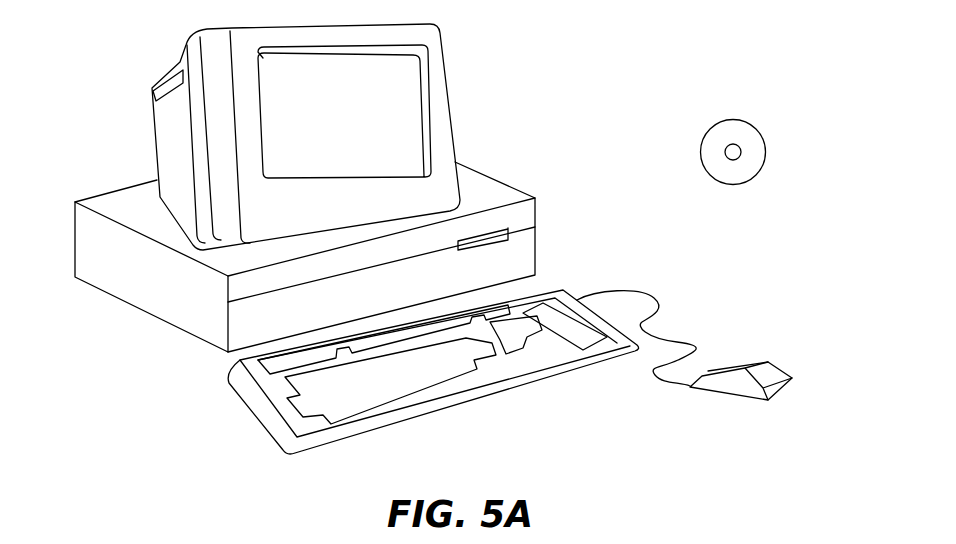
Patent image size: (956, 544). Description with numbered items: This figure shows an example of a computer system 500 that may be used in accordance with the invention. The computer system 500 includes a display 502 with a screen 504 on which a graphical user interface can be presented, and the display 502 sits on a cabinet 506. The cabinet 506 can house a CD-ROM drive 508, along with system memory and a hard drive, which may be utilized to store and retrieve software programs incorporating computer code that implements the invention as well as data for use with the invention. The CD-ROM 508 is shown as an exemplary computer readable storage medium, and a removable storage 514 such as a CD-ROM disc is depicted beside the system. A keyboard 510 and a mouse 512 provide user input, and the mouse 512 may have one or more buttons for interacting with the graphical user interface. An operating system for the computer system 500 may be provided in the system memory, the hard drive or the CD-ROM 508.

The computer system 500 is at (653, 17).
The display 502 is at (452, 135).
The screen 504 is at (412, 87).
The cabinet 506 is at (195, 248).
The CD-ROM drive 508 is at (508, 230).
The keyboard 510 is at (437, 413).
The mouse 512 is at (752, 367).
The removable storage 514 is at (748, 120).